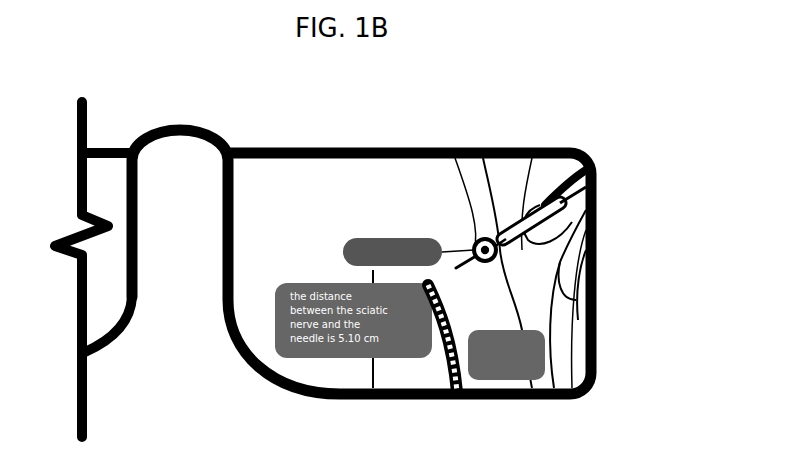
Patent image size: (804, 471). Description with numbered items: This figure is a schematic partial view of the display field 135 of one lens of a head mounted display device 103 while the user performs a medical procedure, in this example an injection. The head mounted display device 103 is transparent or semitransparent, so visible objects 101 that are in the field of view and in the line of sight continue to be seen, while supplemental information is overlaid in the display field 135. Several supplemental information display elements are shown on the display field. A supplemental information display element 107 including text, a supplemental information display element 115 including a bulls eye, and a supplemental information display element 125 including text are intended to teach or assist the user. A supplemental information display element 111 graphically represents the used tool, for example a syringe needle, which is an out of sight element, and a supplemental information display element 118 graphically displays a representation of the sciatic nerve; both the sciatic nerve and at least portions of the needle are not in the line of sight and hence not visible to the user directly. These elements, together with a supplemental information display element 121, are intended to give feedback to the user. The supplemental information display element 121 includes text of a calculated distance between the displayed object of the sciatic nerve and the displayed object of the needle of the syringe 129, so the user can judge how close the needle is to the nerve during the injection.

The visible objects 101 is at (232, 308).
The supplemental information display element 121 is at (248, 343).
The head mounted display device 103 is at (556, 396).
The supplemental information display element 107 is at (343, 252).
The supplemental information display element 111 is at (469, 262).
The supplemental information display element 115 is at (520, 258).
The supplemental information display element 118 is at (481, 396).
The supplemental information display element 125 is at (515, 396).
The syringe 129 is at (466, 204).
The display field 135 is at (536, 178).